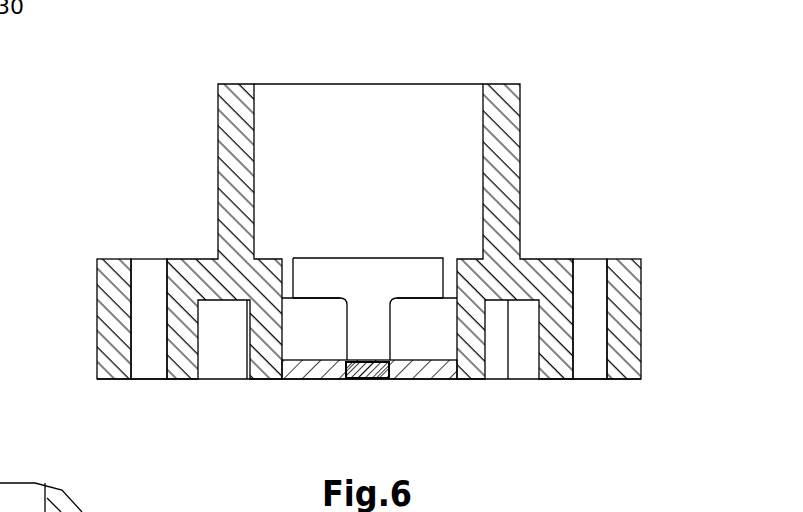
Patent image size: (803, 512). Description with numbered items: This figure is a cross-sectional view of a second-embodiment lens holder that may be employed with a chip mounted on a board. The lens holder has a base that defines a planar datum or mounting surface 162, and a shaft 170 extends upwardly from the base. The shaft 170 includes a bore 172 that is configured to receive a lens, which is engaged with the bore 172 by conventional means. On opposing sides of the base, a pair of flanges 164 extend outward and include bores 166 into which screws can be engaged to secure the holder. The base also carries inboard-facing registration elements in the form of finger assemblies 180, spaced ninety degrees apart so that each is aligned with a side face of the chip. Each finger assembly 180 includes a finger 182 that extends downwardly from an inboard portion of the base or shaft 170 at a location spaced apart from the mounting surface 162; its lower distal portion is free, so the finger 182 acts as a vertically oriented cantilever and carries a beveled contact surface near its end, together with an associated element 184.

The mounting surface 162 is at (185, 380).
The flanges 164 is at (97, 328).
The bores 166 is at (143, 259).
The shaft 170 is at (218, 125).
The bore 172 is at (418, 84).
The finger assemblies 180 is at (364, 335).
The finger 182 is at (270, 333).
The plate 184 is at (270, 372).